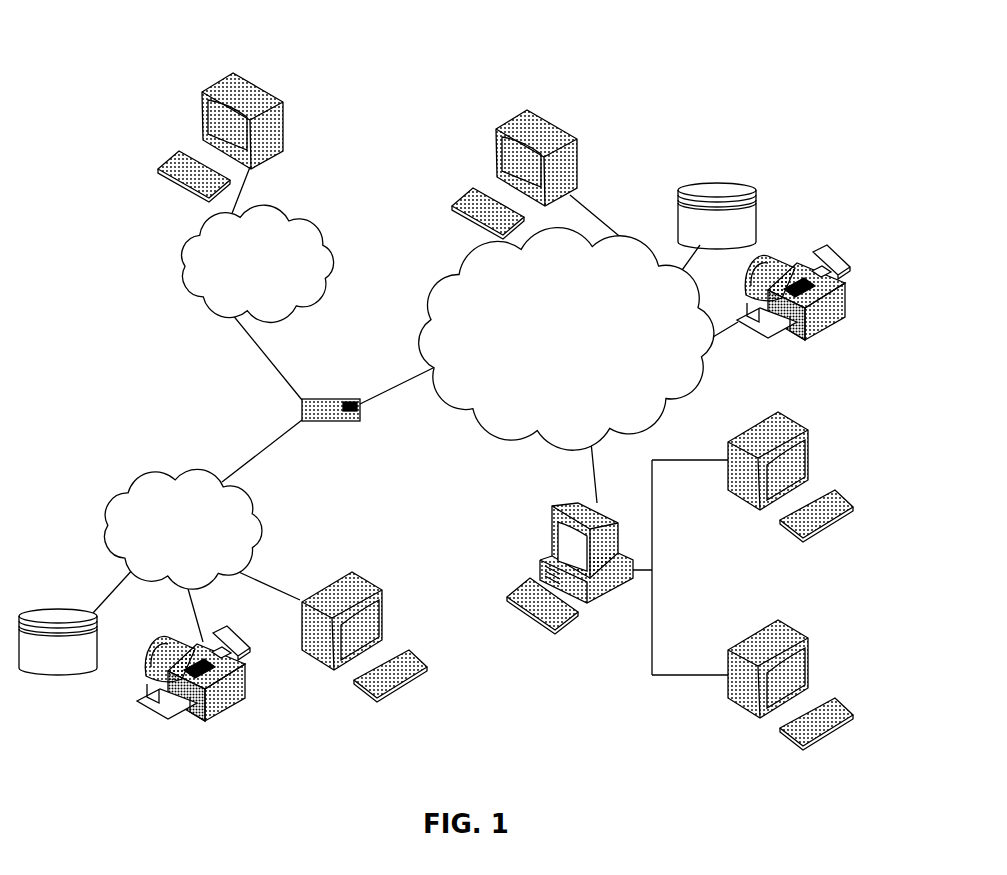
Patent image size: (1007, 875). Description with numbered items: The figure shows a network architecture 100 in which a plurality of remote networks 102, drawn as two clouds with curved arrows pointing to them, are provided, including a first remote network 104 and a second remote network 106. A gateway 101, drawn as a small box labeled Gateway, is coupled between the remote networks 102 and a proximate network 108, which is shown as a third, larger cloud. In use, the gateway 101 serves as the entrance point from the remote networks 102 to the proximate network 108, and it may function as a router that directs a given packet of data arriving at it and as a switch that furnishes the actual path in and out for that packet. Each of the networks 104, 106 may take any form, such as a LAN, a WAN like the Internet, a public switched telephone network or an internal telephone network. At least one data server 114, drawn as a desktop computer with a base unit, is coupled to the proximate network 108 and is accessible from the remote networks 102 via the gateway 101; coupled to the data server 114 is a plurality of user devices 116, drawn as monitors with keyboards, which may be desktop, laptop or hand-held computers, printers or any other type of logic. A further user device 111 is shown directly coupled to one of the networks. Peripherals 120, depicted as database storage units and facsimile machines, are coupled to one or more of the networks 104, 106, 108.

The architecture 100 is at (146, 58).
The gateway 101 is at (313, 399).
The remote networks 102 is at (170, 318).
The first remote network 104 is at (117, 502).
The second remote network 106 is at (325, 237).
The proximate network 108 is at (667, 402).
The user device 111 is at (578, 143).
The data server 114 is at (552, 523).
The user devices 116 is at (283, 112).
The peripheral 120 is at (757, 192).